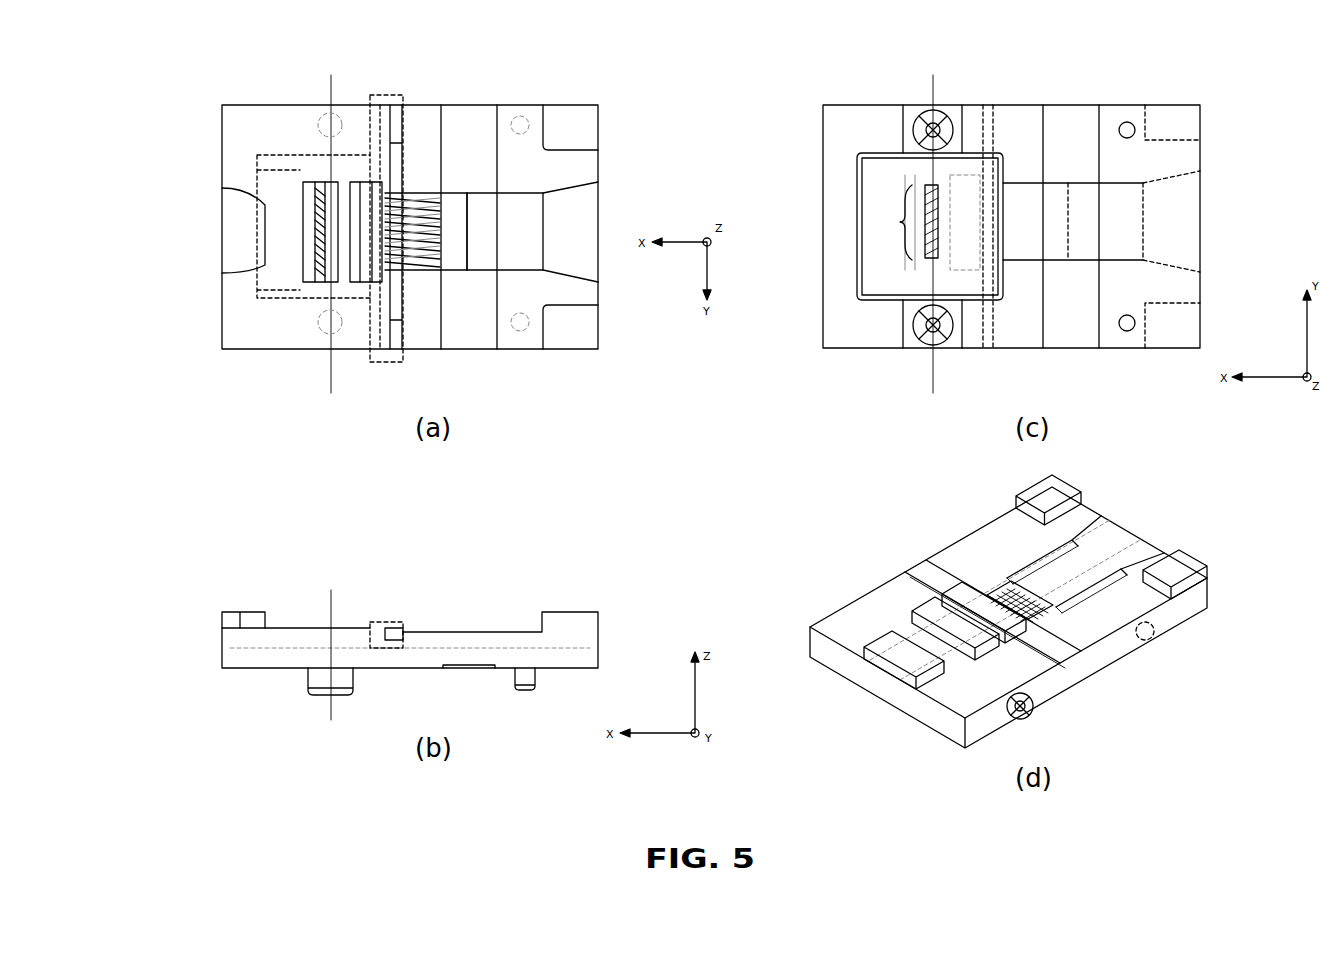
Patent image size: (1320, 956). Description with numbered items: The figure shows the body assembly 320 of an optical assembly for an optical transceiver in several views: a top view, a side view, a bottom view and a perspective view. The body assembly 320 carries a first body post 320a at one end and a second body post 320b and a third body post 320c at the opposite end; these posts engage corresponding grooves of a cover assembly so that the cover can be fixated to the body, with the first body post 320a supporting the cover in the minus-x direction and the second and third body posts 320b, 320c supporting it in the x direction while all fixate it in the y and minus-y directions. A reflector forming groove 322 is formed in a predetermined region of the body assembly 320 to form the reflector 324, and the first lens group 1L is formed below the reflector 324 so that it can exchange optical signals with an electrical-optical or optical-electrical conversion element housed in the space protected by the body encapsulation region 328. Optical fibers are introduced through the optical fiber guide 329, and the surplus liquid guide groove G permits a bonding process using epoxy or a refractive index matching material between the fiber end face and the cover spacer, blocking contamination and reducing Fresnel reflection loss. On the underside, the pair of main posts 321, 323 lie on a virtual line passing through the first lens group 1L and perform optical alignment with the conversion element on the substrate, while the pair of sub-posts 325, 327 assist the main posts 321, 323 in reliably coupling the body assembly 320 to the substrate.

The body assembly 320 is at (522, 40).
The first body post 320a is at (232, 240).
The second body post 320b is at (580, 330).
The third body post 320c is at (570, 120).
The main post 321 is at (308, 685).
The reflector forming groove 322 is at (303, 182).
The main post 323 is at (918, 340).
The reflector 324 is at (350, 182).
The sub-post 325 is at (535, 685).
The sub-post 327 is at (1127, 331).
The body encapsulation region 328 is at (857, 200).
The optical fiber guide 329 is at (575, 210).
The surplus liquid guide groove G is at (395, 95).
The first lens group 1L is at (894, 222).